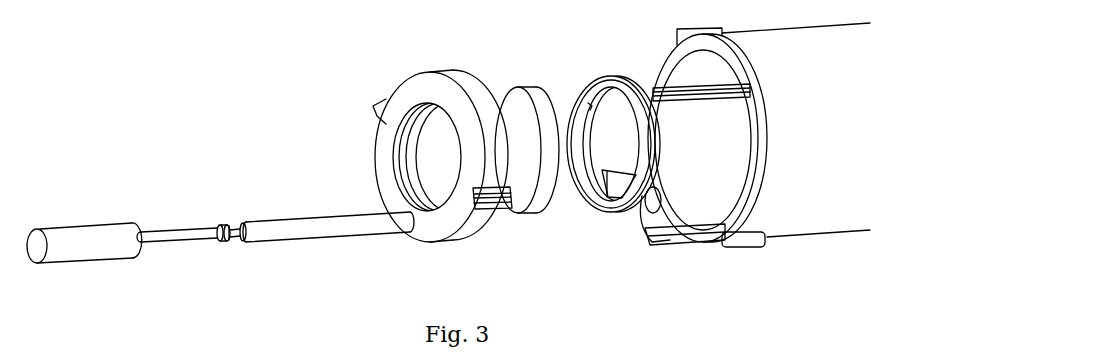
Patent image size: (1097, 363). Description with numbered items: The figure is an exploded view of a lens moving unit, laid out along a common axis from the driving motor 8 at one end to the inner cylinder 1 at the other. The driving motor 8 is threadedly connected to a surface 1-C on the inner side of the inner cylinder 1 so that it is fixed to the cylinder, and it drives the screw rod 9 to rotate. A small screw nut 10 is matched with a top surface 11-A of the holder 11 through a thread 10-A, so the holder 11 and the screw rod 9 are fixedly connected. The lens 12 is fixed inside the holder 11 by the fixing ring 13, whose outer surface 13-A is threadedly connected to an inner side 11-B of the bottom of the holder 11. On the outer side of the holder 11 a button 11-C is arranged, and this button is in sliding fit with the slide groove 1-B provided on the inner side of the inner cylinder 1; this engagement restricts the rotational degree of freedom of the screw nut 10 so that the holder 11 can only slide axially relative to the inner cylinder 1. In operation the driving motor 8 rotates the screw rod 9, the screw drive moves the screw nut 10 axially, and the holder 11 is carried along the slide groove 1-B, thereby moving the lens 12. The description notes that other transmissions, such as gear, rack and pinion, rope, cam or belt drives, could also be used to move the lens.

The inner cylinder 1 is at (757, 150).
The slide groove 1-B is at (675, 63).
The surface on inner side of inner cylinder 1-C is at (668, 234).
The driving motor 8 is at (84, 216).
The screw rod 9 is at (177, 205).
The screw nut 10 is at (239, 205).
The thread 10-A is at (203, 259).
The holder 11 is at (441, 176).
The top surface of holder 11-A is at (328, 247).
The inner side of bottom of holder 11-B is at (361, 134).
The button 11-C is at (516, 227).
The lens 12 is at (518, 123).
The fixing ring 13 is at (597, 122).
The outer surface of fixing ring 13-A is at (601, 227).